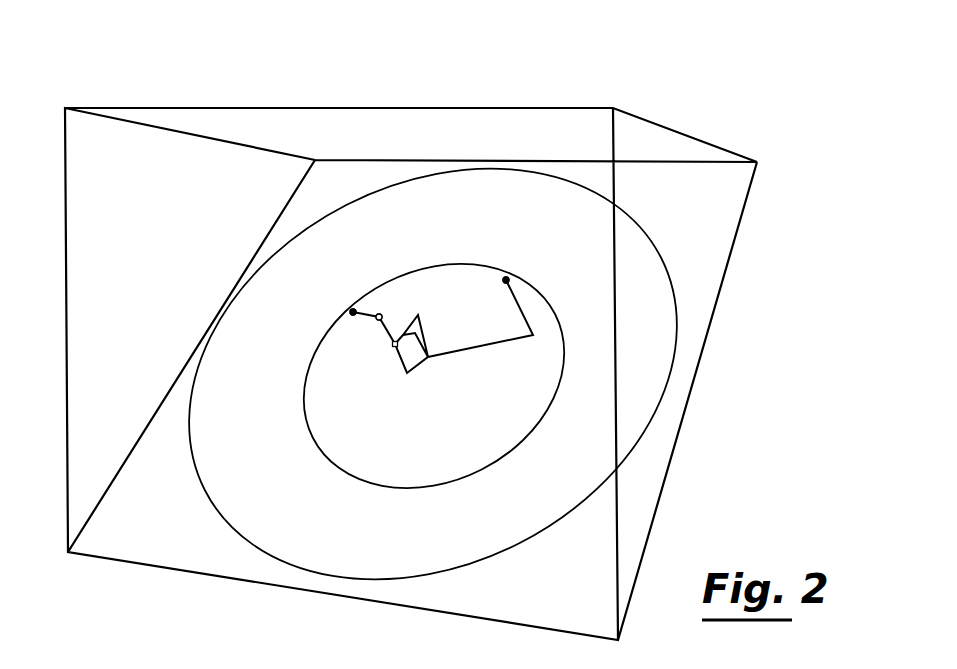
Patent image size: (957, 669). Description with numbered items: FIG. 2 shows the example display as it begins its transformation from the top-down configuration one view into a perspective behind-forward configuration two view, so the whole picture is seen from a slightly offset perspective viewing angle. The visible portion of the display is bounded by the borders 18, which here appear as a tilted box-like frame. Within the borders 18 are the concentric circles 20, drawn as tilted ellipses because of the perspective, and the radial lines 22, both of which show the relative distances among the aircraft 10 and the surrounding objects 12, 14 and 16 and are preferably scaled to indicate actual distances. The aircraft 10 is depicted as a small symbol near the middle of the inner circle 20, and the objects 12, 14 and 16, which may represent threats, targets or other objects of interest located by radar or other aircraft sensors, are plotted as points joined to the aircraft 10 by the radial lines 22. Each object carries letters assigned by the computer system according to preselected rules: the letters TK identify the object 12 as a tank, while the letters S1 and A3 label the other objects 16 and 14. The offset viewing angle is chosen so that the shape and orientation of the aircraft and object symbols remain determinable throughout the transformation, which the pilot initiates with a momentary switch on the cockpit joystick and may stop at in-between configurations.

The aircraft 10 is at (420, 316).
The object 12 is at (350, 312).
The object 14 is at (504, 280).
The object 16 is at (381, 325).
The borders 18 is at (438, 106).
The concentric circles 20 is at (672, 273).
The radial lines 22 is at (373, 327).
The object identifier letters TK is at (344, 299).
The object identifier letters S1 is at (379, 314).
The object identifier letters A3 is at (511, 263).